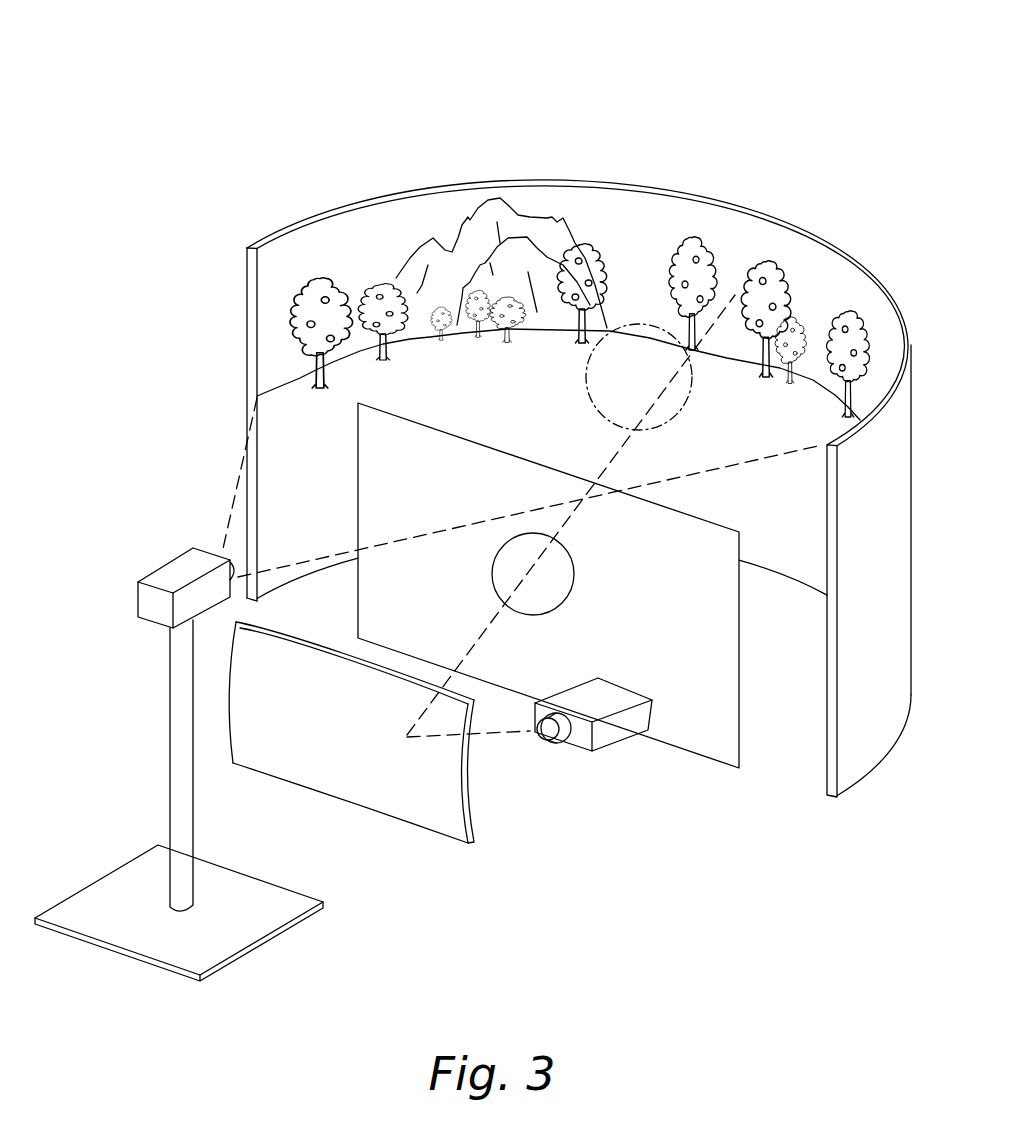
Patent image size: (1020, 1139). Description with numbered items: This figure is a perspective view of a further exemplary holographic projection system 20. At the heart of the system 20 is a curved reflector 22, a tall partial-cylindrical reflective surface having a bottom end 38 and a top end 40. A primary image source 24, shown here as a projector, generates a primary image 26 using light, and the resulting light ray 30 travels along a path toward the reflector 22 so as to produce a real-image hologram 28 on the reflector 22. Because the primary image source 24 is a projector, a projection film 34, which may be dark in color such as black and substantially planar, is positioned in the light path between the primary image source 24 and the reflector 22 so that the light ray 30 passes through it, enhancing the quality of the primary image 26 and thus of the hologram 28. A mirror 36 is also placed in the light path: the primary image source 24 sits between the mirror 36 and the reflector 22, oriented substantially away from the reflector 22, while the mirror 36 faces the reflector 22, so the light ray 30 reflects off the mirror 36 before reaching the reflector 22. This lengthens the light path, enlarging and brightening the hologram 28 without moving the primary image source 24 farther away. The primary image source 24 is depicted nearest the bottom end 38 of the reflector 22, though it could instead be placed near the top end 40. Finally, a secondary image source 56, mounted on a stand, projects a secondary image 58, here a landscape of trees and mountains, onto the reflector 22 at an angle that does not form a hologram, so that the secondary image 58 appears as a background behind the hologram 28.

The holographic projection system 20 is at (205, 78).
The curved reflector 22 is at (681, 178).
The primary image source 24 is at (608, 730).
The primary image 26 is at (560, 578).
The hologram 28 is at (603, 378).
The light ray 30 is at (495, 736).
The projection film 34 is at (715, 743).
The mirror 36 is at (432, 818).
The bottom end 38 is at (830, 798).
The top end 40 is at (365, 198).
The secondary image source 56 is at (178, 573).
The secondary image 58 is at (320, 278).